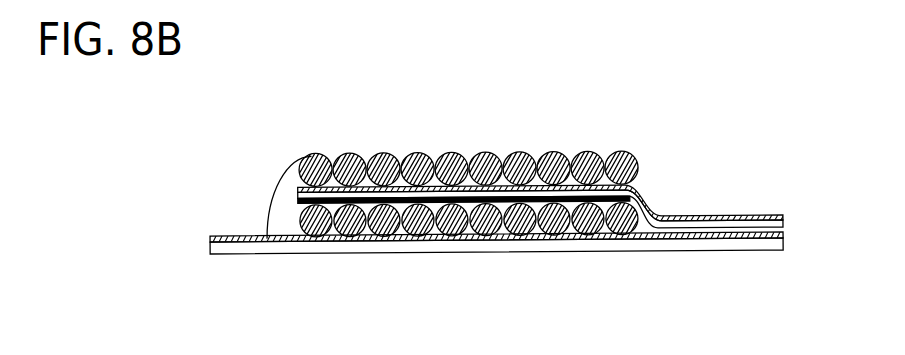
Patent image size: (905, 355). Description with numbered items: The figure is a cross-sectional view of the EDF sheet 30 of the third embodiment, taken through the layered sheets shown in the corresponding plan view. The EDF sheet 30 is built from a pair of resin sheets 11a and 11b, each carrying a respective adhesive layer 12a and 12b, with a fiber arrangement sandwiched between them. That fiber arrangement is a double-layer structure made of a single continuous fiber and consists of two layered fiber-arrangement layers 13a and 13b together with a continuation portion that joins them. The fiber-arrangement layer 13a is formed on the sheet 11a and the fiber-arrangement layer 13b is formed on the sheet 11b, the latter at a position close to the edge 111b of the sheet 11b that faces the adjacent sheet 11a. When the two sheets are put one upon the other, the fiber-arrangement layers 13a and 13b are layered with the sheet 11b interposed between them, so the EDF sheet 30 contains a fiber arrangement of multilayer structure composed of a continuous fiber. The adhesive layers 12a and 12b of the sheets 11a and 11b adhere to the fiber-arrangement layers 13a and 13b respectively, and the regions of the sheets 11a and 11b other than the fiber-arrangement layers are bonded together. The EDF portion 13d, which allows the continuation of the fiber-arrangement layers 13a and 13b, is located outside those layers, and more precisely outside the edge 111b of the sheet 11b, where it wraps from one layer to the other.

The EDF sheet 30 is at (652, 92).
The resin sheet 11a is at (705, 246).
The adhesive layer 12a is at (763, 241).
The resin sheet 11b is at (697, 224).
The adhesive layer 12b is at (752, 219).
The fiber-arrangement layer 13a is at (407, 236).
The fiber-arrangement layer 13b is at (340, 154).
The EDF portion 13d is at (277, 184).
The edge 111b is at (297, 197).